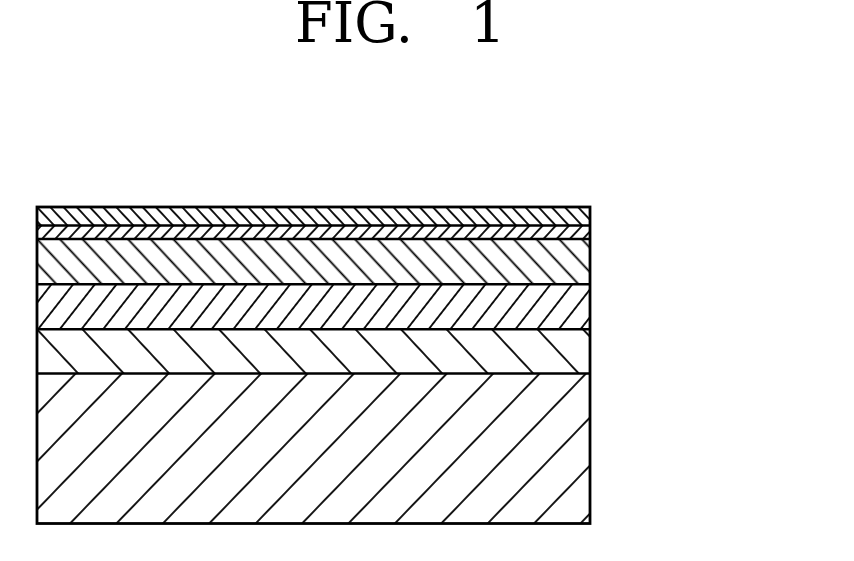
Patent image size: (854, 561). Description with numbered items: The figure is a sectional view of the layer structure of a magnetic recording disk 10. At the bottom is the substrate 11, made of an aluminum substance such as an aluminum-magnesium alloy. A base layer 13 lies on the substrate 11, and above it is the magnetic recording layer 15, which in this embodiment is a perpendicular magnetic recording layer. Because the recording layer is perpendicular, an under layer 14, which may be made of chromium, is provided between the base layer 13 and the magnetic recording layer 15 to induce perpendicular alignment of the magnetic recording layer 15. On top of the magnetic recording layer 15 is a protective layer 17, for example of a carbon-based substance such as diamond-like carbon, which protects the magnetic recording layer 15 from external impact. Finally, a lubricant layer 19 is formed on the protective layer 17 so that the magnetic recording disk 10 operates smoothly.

The magnetic recording disk 10 is at (694, 156).
The substrate 11 is at (590, 450).
The base layer 13 is at (590, 355).
The under layer 14 is at (590, 310).
The magnetic recording layer 15 is at (590, 265).
The protective layer 17 is at (590, 234).
The lubricant layer 19 is at (590, 218).